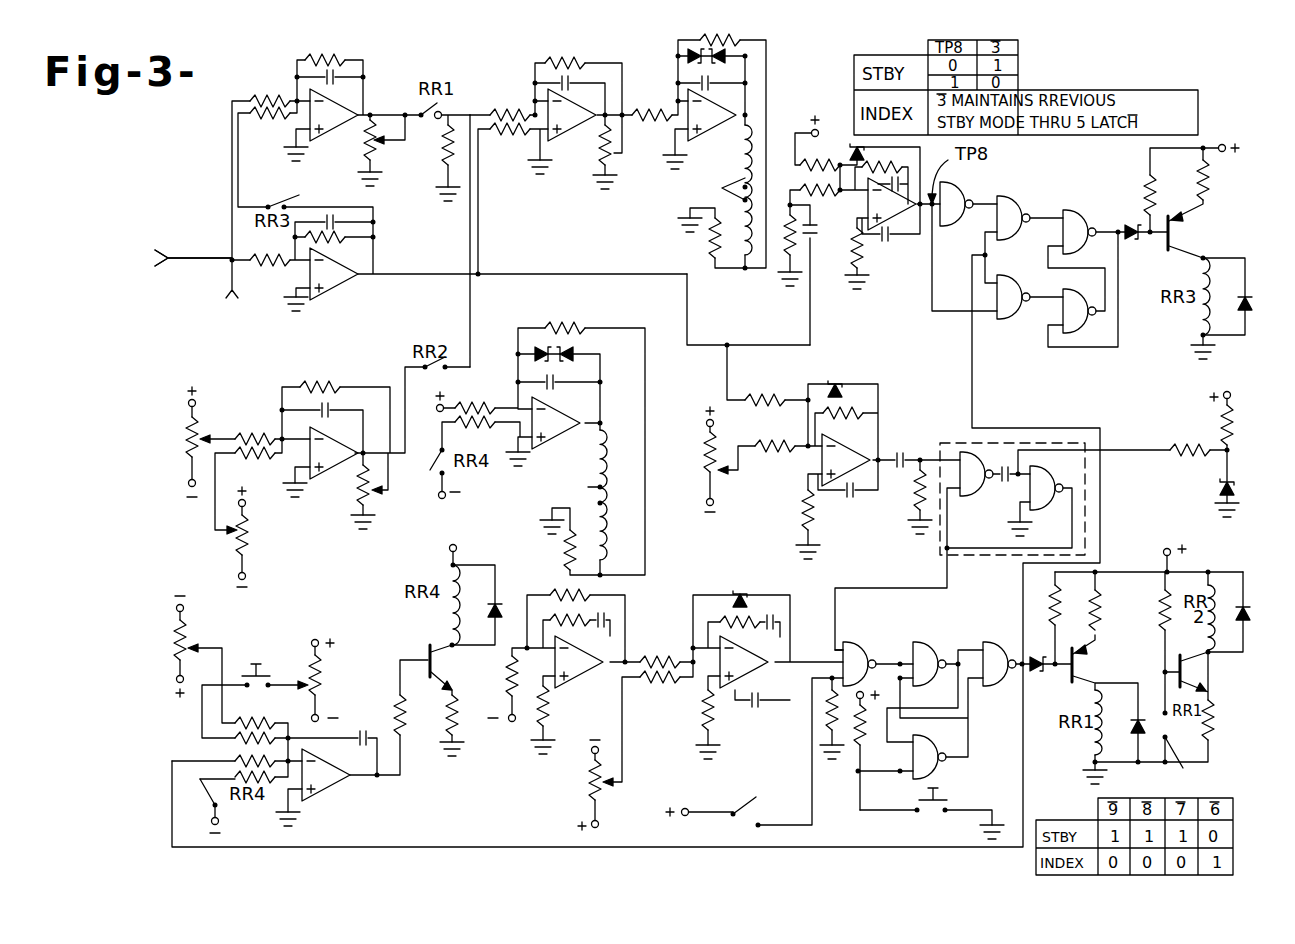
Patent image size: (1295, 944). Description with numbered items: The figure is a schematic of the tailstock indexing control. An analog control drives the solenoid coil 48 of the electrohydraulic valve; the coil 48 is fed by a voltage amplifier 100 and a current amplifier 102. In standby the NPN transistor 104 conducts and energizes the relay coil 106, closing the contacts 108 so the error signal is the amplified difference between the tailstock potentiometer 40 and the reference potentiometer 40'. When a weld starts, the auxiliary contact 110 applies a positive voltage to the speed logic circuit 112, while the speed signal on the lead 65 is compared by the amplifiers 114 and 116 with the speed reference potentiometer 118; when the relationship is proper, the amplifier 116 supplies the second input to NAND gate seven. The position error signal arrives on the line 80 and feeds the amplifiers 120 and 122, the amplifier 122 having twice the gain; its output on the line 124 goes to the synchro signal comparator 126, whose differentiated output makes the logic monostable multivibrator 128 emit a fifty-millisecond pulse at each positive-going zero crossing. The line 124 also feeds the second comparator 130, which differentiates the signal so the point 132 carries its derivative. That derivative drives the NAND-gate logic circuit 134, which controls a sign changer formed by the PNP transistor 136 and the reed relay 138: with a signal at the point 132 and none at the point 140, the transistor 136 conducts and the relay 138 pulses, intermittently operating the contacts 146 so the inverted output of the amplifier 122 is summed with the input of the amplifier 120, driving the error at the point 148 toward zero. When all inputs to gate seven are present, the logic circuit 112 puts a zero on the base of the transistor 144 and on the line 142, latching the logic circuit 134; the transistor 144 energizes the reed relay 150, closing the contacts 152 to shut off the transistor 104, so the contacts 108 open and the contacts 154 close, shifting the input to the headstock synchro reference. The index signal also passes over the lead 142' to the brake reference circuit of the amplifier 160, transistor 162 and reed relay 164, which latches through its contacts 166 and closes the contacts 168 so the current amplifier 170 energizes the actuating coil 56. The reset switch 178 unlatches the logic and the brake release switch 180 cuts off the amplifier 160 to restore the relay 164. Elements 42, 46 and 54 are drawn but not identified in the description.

The potentiometer 40 is at (173, 442).
The reference potentiometer 40' is at (261, 535).
The operational amplifier 42 is at (222, 436).
The solenoid coil 46 is at (745, 115).
The solenoid coil 48 is at (716, 189).
The solenoid coil 54 is at (608, 405).
The actuating coil 56 is at (600, 487).
The lead 65 is at (510, 714).
The line 80 is at (200, 255).
The voltage amplifier 100 is at (584, 127).
The current amplifier 102 is at (726, 128).
The NPN transistor 104 is at (1178, 662).
The relay coil 106 is at (1226, 592).
The contacts 108 is at (460, 355).
The auxiliary contact 110 is at (770, 803).
The speed logic circuit 112 is at (933, 644).
The amplifier 114 is at (580, 680).
The amplifier 116 is at (712, 672).
The speed reference potentiometer 118 is at (590, 793).
The amplifier 120 is at (338, 124).
The amplifier 122 is at (334, 286).
The line 124 is at (775, 345).
The synchro signal comparator 126 is at (820, 458).
The logic monostable multivibrator 128 is at (960, 443).
The second comparator 130 is at (866, 200).
The point 132 is at (934, 222).
The logic circuit 134 is at (1100, 156).
The PNP transistor 136 is at (1172, 255).
The reed relay 138 is at (1200, 312).
The point 140 is at (1125, 222).
The line 142 is at (1036, 459).
The lead 142' is at (597, 755).
The transistor 144 is at (1072, 684).
The relay contacts 146 is at (293, 200).
The point 148 is at (416, 112).
The reed relay 150 is at (1094, 742).
The contacts 152 is at (1183, 768).
The contacts 154 is at (434, 132).
The amplifier 160 is at (334, 788).
The transistor 162 is at (428, 655).
The reed relay 164 is at (453, 600).
The contacts 166 is at (200, 778).
The contacts 168 is at (428, 473).
The current amplifier 170 is at (566, 433).
The reset switch 178 is at (940, 795).
The brake release switch 180 is at (257, 648).